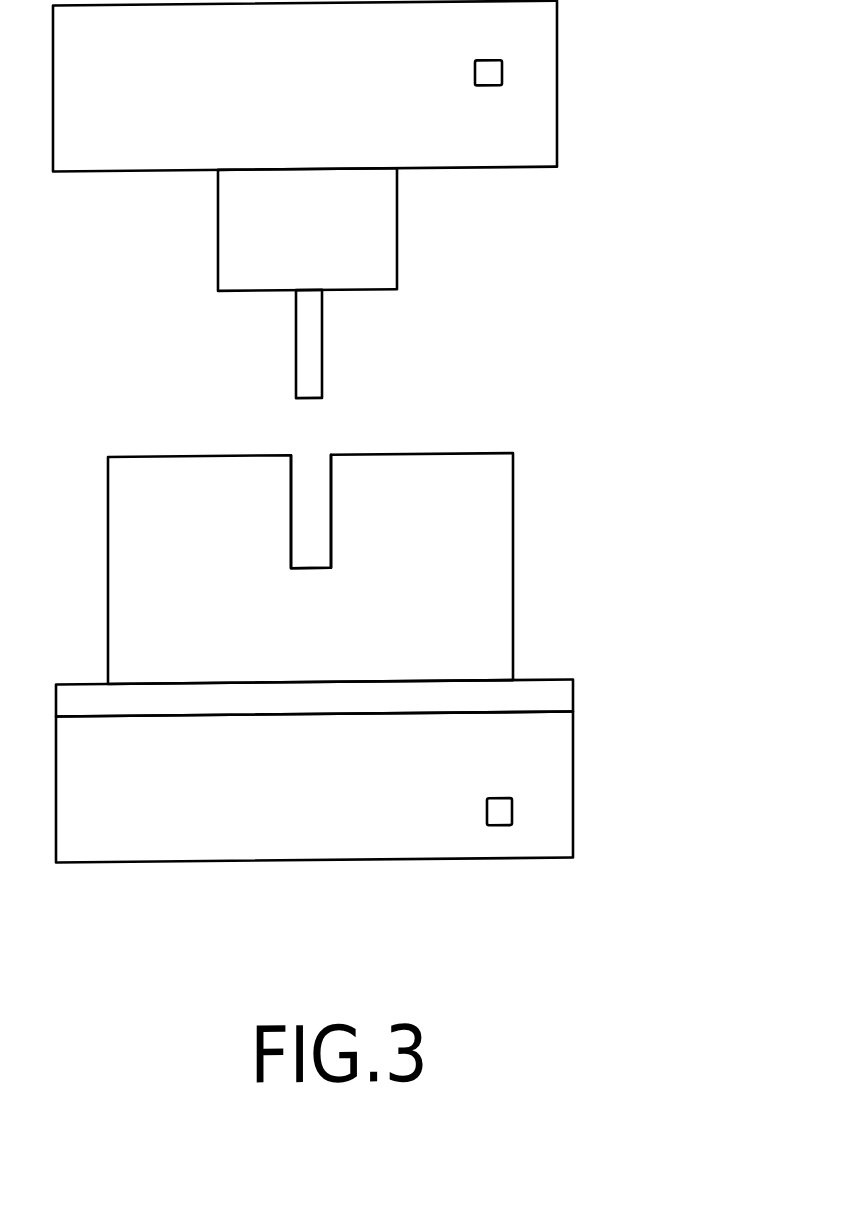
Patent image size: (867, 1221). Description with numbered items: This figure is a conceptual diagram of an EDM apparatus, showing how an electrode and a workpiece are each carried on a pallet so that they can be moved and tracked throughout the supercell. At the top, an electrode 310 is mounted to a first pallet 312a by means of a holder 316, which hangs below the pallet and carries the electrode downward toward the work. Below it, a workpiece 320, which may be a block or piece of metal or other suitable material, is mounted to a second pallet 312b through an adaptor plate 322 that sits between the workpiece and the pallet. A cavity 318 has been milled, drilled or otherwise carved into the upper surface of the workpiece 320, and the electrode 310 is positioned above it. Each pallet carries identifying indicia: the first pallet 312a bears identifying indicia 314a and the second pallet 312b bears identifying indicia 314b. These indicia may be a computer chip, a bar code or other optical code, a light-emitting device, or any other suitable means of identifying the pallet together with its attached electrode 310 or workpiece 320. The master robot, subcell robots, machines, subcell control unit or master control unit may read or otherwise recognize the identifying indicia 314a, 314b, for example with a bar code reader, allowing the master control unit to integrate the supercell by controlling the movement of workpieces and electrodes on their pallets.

The electrode 310 is at (371, 343).
The pallet 312a is at (376, 85).
The pallet 312b is at (388, 778).
The identifying indicia 314a is at (572, 56).
The identifying indicia 314b is at (583, 793).
The holder 316 is at (378, 229).
The cavity 318 is at (378, 484).
The workpiece 320 is at (375, 568).
The adaptor plate 322 is at (378, 673).